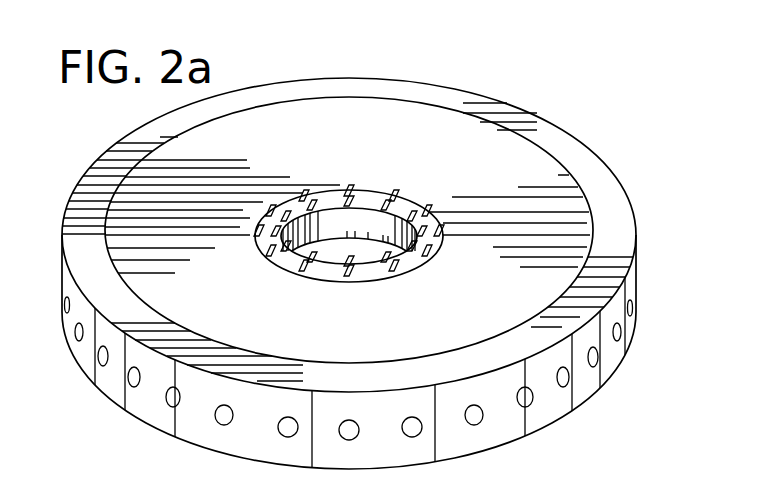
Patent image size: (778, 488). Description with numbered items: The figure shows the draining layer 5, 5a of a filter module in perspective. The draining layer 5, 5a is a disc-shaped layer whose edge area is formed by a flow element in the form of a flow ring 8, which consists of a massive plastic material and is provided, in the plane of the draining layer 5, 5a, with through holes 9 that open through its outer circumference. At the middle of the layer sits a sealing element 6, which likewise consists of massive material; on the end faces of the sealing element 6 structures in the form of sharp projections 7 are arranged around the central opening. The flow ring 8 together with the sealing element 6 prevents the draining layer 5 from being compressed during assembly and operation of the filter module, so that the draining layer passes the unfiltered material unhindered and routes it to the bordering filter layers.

The draining layer 5 is at (349, 201).
The draining layer 5a is at (482, 150).
The sealing element 6 is at (287, 193).
The sharp projections 7 is at (348, 183).
The flow ring 8 is at (616, 218).
The through holes 9 is at (528, 400).